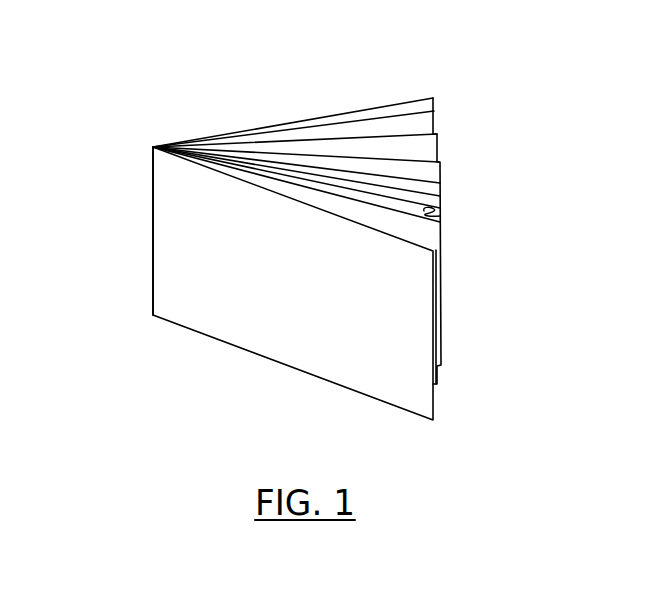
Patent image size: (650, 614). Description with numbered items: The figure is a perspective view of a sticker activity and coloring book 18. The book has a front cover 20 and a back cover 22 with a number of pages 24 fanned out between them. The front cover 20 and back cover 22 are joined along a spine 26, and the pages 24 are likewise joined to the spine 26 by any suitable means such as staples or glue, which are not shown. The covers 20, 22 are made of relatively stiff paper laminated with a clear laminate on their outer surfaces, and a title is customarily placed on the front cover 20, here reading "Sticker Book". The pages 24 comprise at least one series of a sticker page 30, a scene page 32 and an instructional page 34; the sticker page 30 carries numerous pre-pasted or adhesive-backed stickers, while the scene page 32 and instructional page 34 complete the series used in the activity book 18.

The sticker activity and coloring book 18 is at (361, 75).
The front cover 20 is at (373, 386).
The back cover 22 is at (423, 95).
The pages 24 is at (453, 167).
The spine 26 is at (152, 249).
The sticker page 30 is at (428, 233).
The scene page 32 is at (433, 212).
The instructional page 34 is at (441, 217).